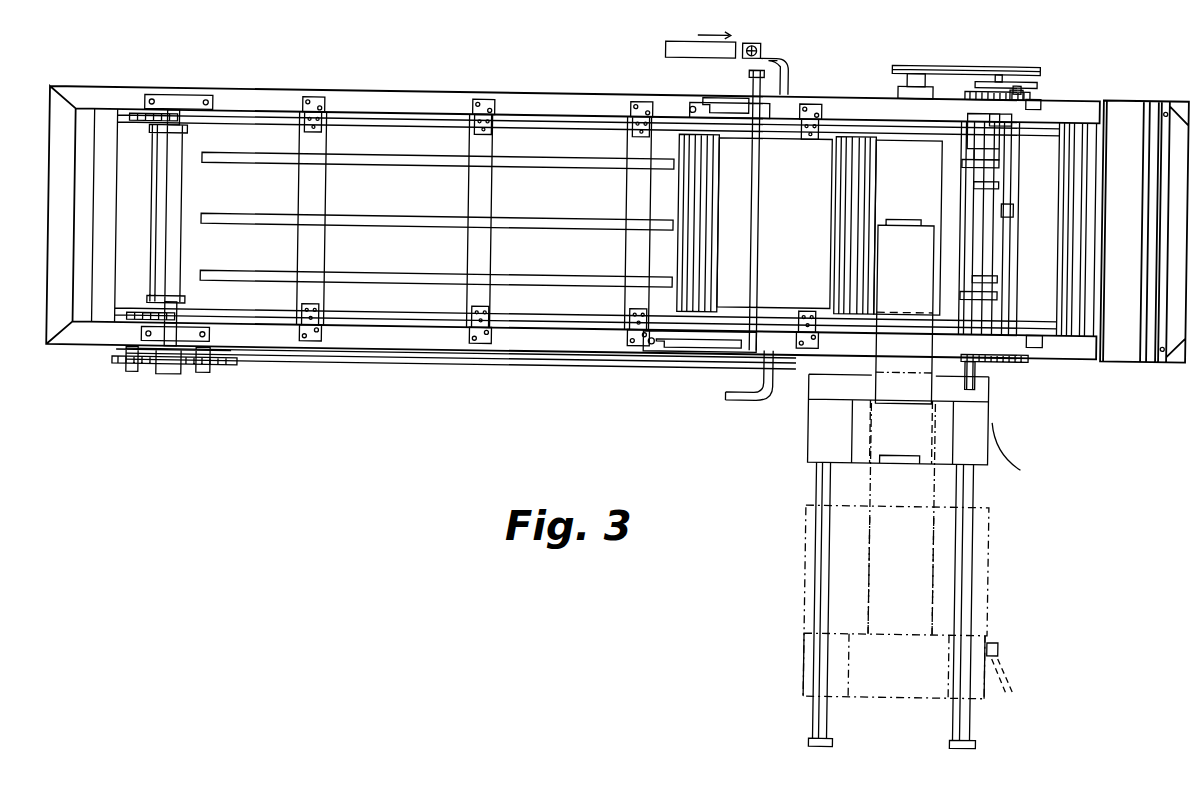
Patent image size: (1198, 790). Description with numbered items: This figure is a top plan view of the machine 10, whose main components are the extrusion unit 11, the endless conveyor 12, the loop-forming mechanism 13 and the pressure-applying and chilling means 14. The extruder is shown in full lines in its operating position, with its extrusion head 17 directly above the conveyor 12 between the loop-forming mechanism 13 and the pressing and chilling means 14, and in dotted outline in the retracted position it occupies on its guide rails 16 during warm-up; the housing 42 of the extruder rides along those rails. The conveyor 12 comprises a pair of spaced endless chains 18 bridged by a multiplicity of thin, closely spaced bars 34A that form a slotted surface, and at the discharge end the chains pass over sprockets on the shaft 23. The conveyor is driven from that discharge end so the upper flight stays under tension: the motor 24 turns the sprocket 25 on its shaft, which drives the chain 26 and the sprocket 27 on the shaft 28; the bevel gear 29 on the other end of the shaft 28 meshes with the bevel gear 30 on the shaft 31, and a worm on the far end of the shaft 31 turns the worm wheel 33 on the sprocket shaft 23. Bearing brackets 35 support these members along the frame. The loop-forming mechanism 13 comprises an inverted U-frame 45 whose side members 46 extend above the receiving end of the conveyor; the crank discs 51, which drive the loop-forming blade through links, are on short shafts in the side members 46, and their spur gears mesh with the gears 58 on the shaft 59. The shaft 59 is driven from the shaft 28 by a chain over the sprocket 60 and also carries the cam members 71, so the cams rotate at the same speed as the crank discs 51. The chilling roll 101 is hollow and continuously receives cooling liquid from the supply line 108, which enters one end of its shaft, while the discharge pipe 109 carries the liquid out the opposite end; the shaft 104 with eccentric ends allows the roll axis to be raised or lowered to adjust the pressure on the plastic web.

The machine 10 is at (464, 424).
The extrusion unit 11 is at (918, 429).
The endless conveyor 12 is at (690, 178).
The loop-forming mechanism 13 is at (1086, 53).
The pressure-applying and chilling means 14 is at (818, 61).
The guide rails 16 is at (822, 478).
The extrusion head 17 is at (919, 189).
The endless chains 18 is at (134, 119).
The sprocket shaft 23 is at (170, 205).
The motor 24 is at (900, 80).
The sprocket on the motor shaft 25 is at (908, 53).
The chain 26 is at (951, 53).
The sprocket 27 is at (998, 60).
The shaft 28 is at (990, 77).
The bevel gear 29 is at (995, 350).
The bevel gear 30 is at (981, 372).
The shaft 31 is at (400, 360).
The worm wheel 33 is at (120, 364).
The conveyor bars 34A is at (598, 272).
The mounting brackets 35 is at (316, 95).
The column housing 42 is at (918, 264).
The inverted U-frame 45 is at (1122, 95).
The side members 46 is at (1080, 96).
The crank discs 51 is at (1000, 152).
The gears 58 is at (1033, 96).
The shaft 59 is at (1025, 66).
The sprocket 60 is at (1020, 72).
The cam member 71 is at (995, 170).
The roll 101 is at (857, 137).
The shaft 104 is at (758, 192).
The supply line 108 is at (699, 31).
The discharge pipe 109 is at (745, 392).